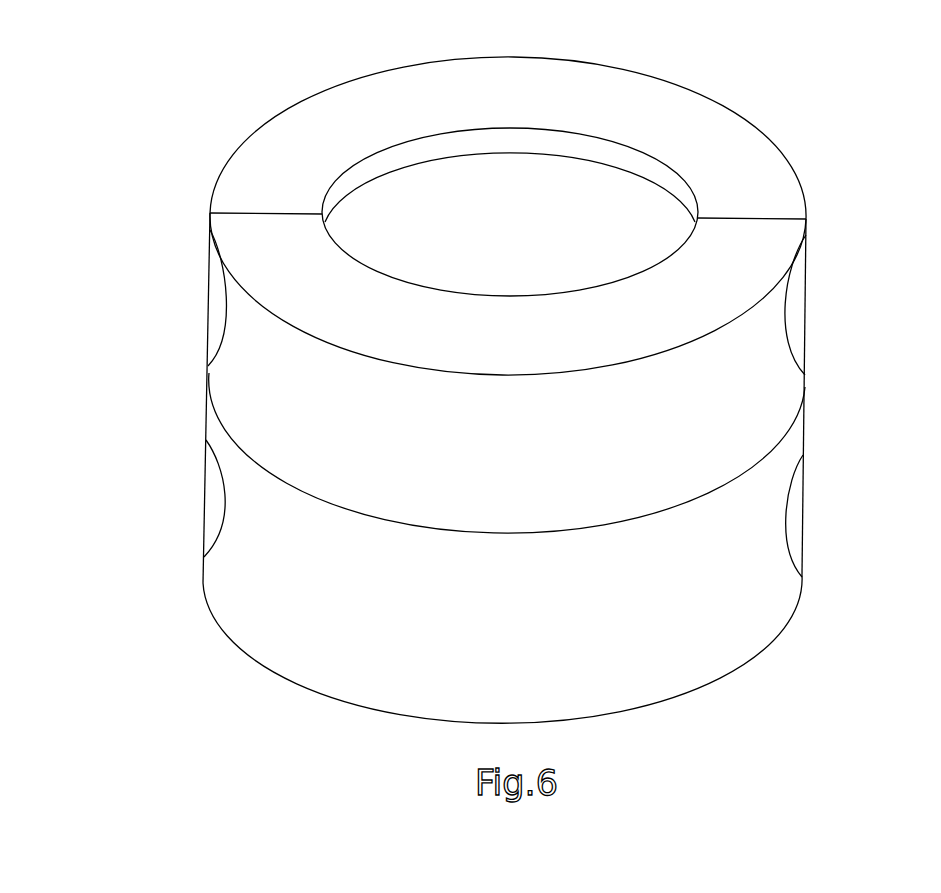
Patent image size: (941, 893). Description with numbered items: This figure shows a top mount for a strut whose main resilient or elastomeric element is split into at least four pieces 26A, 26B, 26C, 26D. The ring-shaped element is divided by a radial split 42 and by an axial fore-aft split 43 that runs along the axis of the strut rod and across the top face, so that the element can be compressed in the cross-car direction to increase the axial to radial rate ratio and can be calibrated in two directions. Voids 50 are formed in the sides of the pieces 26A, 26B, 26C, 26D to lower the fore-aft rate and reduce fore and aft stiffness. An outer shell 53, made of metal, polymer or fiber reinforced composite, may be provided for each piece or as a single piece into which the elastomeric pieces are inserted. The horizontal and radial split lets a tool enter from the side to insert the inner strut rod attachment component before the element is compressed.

The main resilient or elastomeric element piece 26A is at (233, 377).
The main resilient or elastomeric element piece 26B is at (233, 590).
The main resilient or elastomeric element piece 26C is at (669, 118).
The main resilient or elastomeric element piece 26D is at (822, 408).
The radial split 42 is at (236, 430).
The axial fore-aft split 43 is at (228, 213).
The voids 50 is at (196, 313).
The outer shell 53 is at (247, 135).